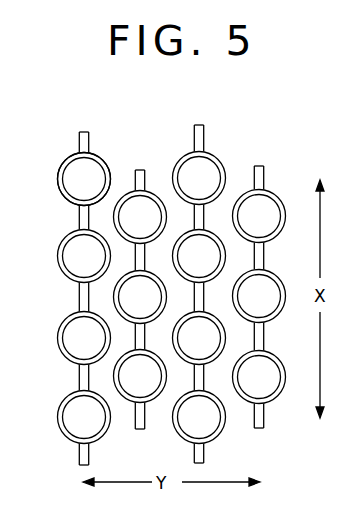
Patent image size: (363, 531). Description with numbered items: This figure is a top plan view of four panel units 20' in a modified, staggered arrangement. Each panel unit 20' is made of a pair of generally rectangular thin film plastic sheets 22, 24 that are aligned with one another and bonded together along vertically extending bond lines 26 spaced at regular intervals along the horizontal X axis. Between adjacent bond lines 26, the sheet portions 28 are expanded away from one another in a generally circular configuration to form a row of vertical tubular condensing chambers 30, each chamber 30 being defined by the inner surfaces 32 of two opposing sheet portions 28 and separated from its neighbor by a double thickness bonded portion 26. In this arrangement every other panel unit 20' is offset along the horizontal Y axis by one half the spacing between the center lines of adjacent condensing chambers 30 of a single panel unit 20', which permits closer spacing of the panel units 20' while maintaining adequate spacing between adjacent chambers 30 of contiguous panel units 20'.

The panel unit 20' is at (241, 289).
The thin film plastic sheet 22 is at (103, 159).
The thin film plastic sheet 24 is at (61, 172).
The bond line 26 is at (80, 216).
The sheet portion 28 is at (59, 261).
The condensing chamber 30 is at (74, 409).
The inner surface 32 is at (278, 378).